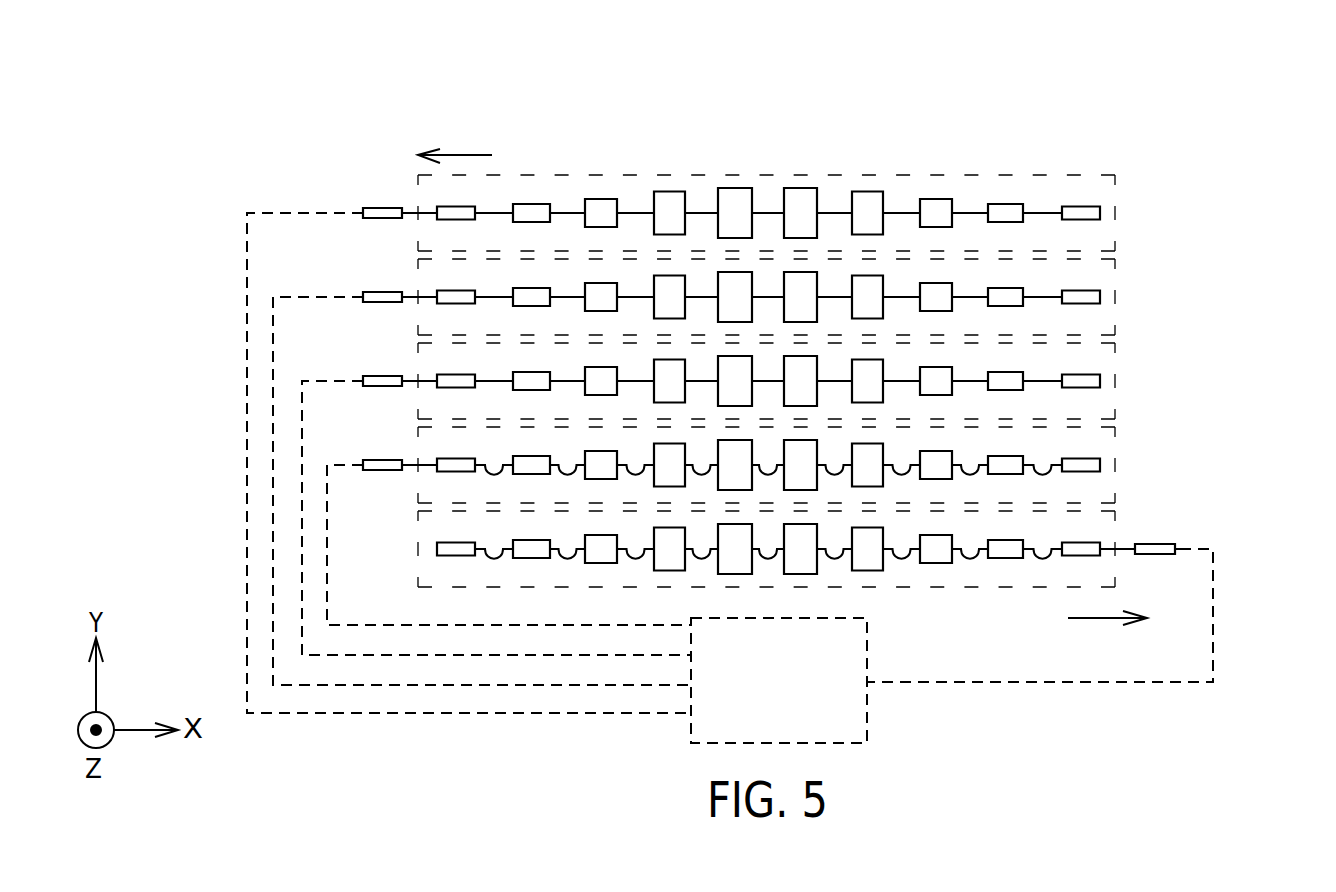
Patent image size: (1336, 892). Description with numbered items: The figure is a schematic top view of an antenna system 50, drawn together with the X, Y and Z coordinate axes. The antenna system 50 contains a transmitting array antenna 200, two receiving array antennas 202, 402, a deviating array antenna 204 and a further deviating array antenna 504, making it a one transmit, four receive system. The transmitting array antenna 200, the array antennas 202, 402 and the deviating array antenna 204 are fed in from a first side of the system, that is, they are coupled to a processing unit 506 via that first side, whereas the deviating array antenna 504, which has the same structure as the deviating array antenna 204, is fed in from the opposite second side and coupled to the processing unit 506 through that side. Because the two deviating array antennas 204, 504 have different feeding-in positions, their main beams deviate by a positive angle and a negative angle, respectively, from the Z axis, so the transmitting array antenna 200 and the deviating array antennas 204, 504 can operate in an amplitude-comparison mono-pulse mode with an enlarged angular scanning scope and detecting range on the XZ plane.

The antenna system 50 is at (1206, 110).
The transmitting array antenna 200 is at (1115, 213).
The array antenna 202 is at (1115, 297).
The array antenna 402 is at (1115, 381).
The deviating array antenna 204 is at (1115, 465).
The deviating array antenna 504 is at (416, 549).
The processing unit 506 is at (867, 668).